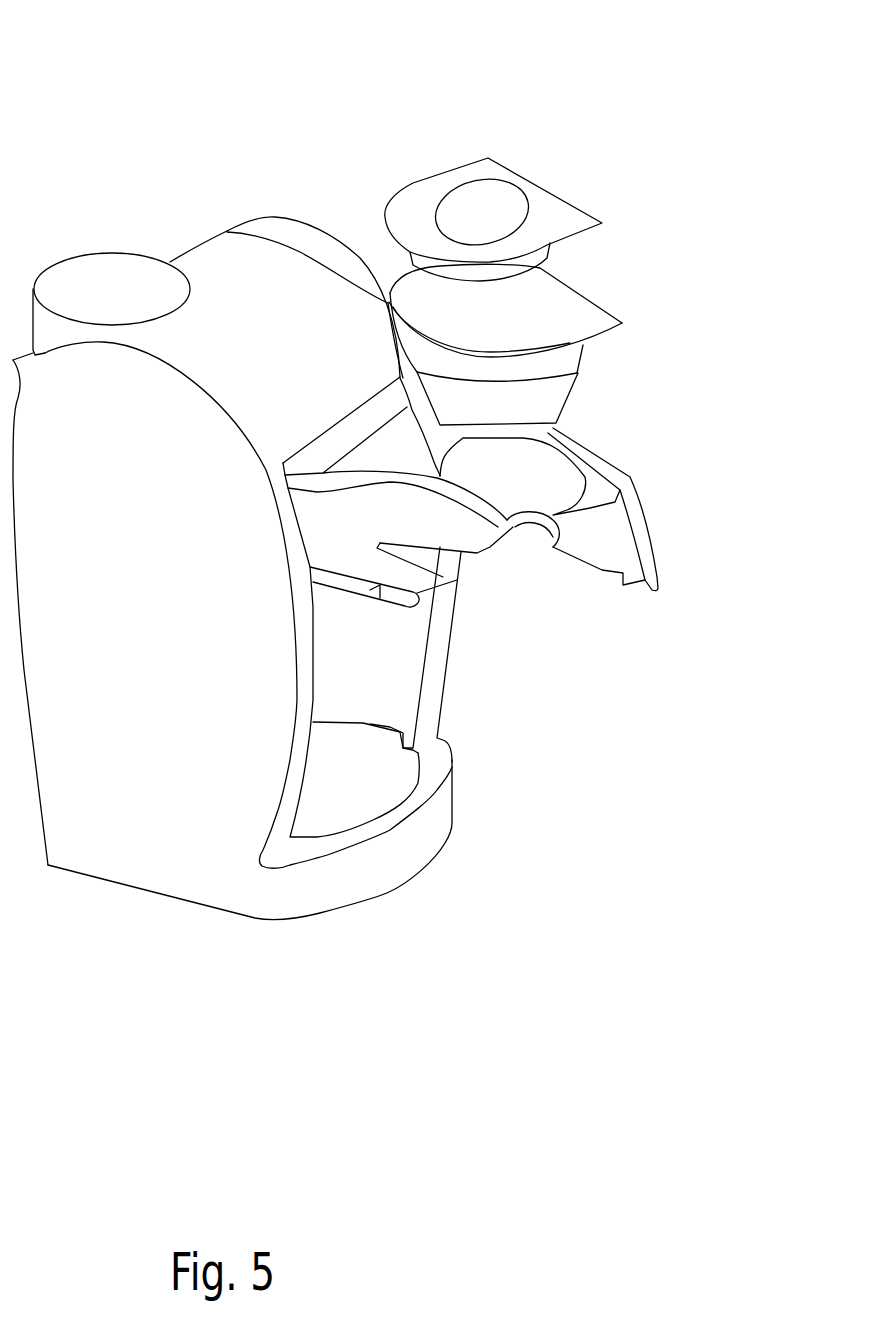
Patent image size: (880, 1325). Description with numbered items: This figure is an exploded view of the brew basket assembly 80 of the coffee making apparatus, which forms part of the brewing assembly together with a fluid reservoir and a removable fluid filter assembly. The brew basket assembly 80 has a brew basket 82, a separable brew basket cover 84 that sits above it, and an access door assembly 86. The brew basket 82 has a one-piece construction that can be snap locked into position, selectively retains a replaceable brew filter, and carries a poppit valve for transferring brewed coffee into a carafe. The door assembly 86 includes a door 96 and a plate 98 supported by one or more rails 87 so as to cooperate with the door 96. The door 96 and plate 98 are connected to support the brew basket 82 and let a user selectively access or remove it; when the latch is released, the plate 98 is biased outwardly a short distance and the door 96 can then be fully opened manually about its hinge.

The brew basket assembly 80 is at (662, 88).
The brew basket 82 is at (587, 315).
The brew basket cover 84 is at (590, 210).
The access door assembly 86 is at (661, 493).
The rails 87 is at (382, 593).
The door 96 is at (601, 552).
The plate 98 is at (438, 677).